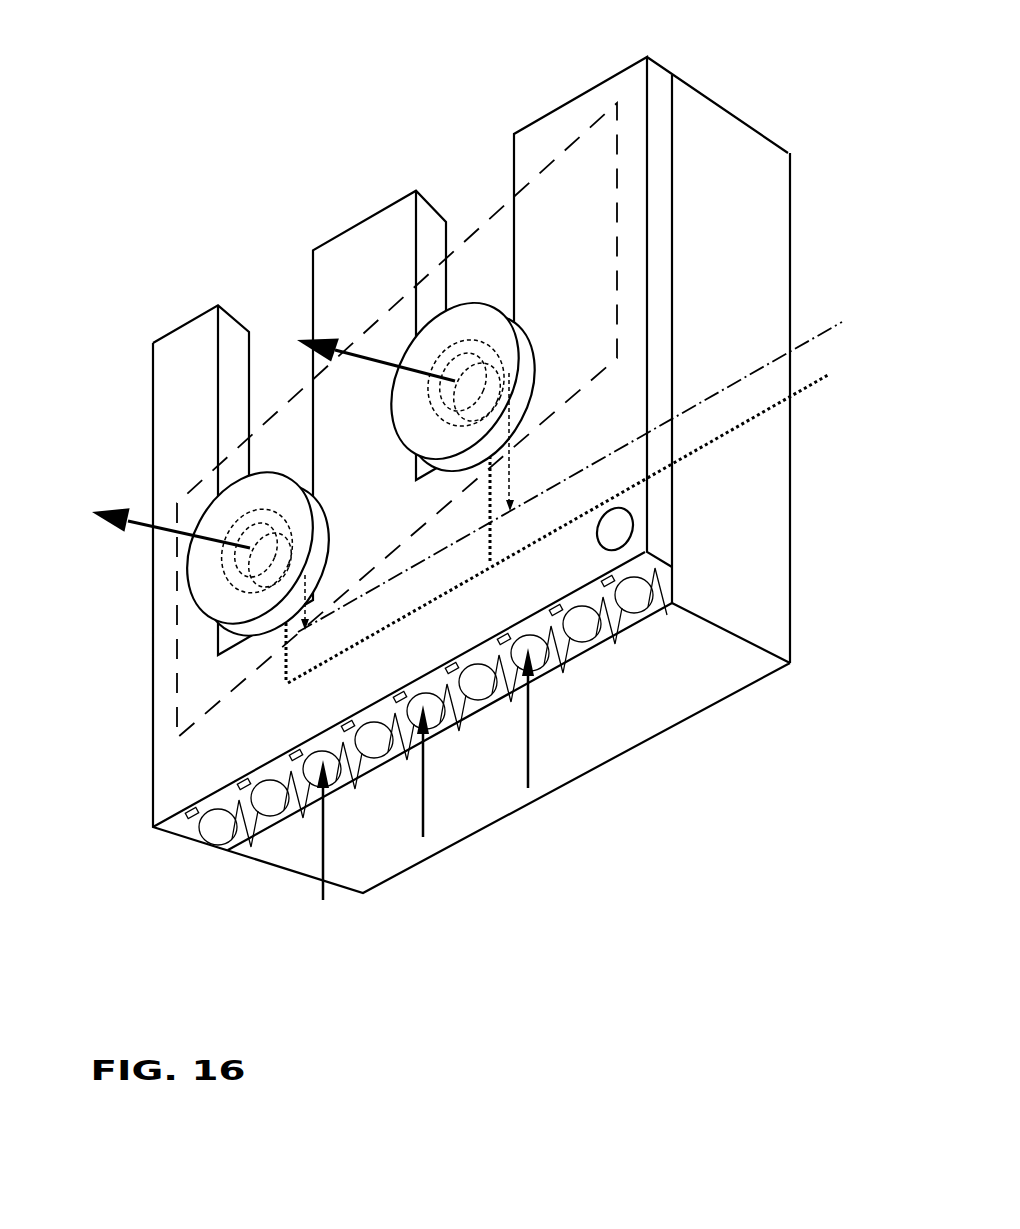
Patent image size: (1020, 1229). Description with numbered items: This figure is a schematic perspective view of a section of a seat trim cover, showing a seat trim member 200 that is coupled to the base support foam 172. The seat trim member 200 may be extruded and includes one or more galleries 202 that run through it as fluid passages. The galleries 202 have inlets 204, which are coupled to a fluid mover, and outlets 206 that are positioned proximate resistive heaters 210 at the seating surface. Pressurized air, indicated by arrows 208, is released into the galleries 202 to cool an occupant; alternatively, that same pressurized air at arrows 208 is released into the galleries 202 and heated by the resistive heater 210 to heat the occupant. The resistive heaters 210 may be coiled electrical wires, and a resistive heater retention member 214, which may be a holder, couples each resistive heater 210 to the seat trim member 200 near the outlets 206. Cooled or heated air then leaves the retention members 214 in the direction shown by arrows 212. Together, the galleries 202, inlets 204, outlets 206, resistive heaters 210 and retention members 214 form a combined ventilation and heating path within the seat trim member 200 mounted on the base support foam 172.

The seat trim member 200 is at (653, 260).
The base support foam 172 is at (742, 284).
The outlets 206 is at (293, 518).
The resistive heater 210 is at (240, 578).
The arrows 212 is at (362, 352).
The resistive heater retention member 214 is at (480, 317).
The galleries 202 is at (218, 830).
The arrows 208 is at (325, 865).
The inlets 204 is at (500, 652).